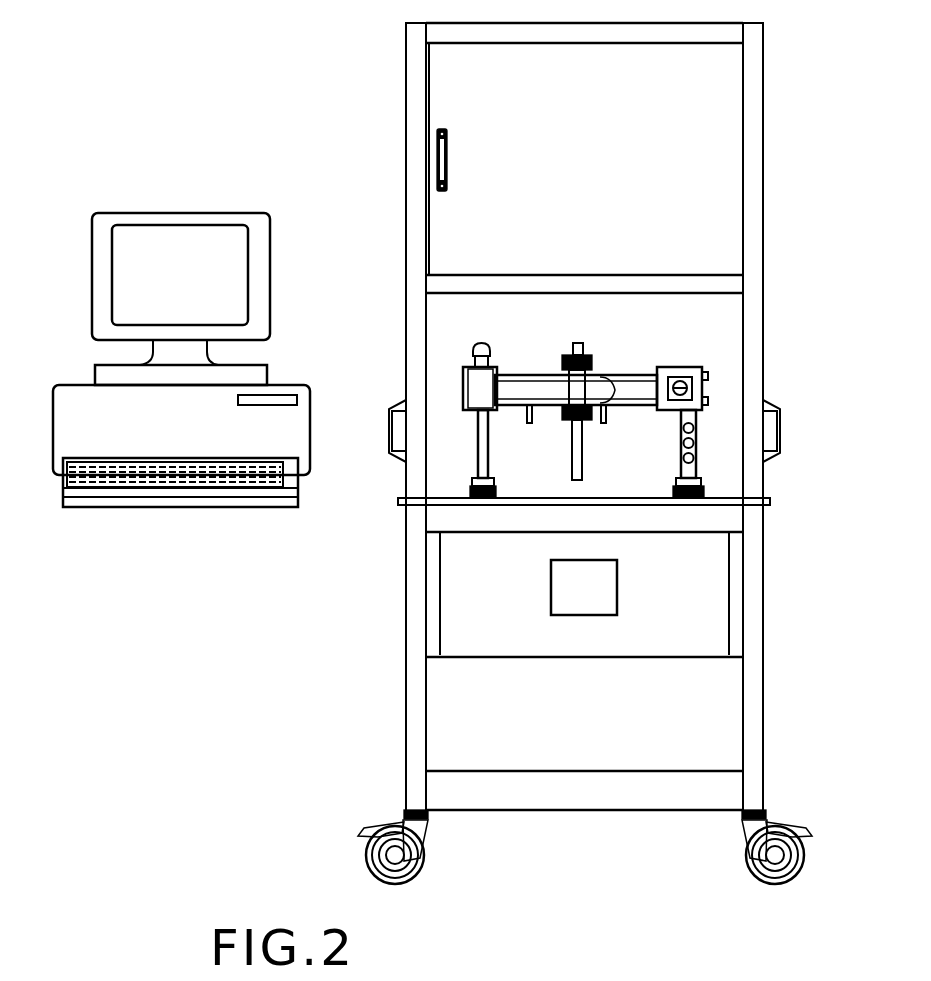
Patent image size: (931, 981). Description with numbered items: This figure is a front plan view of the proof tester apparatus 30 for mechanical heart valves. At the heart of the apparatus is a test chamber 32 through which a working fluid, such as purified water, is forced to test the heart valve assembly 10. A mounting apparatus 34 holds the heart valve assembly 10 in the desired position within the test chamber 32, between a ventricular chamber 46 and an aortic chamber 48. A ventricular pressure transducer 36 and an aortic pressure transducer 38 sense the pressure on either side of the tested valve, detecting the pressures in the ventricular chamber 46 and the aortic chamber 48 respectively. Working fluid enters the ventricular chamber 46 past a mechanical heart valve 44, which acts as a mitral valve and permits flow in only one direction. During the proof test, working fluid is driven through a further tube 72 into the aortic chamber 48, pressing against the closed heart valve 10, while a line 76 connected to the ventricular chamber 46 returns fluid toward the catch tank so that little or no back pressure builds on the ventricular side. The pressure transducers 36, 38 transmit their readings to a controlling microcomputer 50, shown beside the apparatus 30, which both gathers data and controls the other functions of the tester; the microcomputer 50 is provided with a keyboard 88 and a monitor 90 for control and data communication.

The heart valve assembly 10 is at (578, 388).
The test apparatus 30 is at (778, 268).
The test chamber 32 is at (607, 378).
The mounting apparatus 34 is at (578, 352).
The ventricular pressure transducer 36 is at (605, 420).
The aortic pressure transducer 38 is at (530, 412).
The mechanical heart valve 44 is at (683, 378).
The ventricular chamber 46 is at (645, 378).
The aortic chamber 48 is at (533, 382).
The microcomputer 50 is at (73, 392).
The tube 72 is at (480, 456).
The line 76 is at (688, 442).
The keyboard 88 is at (65, 478).
The monitor 90 is at (101, 306).